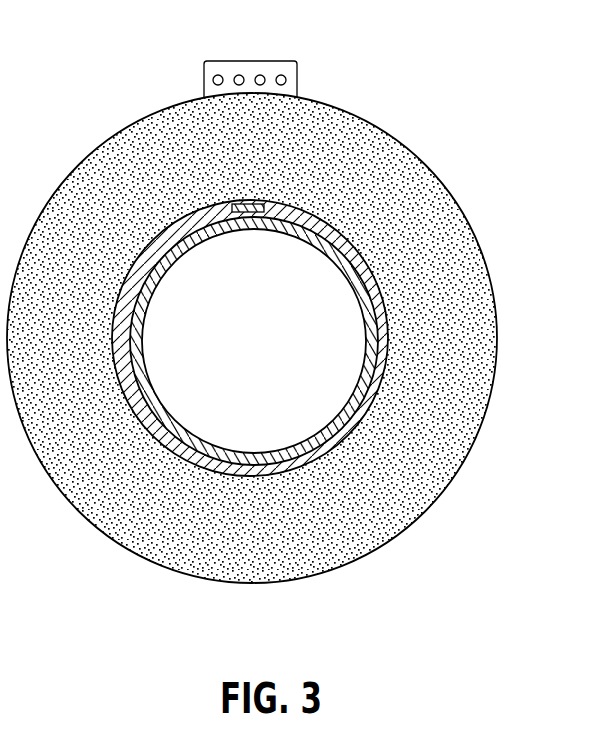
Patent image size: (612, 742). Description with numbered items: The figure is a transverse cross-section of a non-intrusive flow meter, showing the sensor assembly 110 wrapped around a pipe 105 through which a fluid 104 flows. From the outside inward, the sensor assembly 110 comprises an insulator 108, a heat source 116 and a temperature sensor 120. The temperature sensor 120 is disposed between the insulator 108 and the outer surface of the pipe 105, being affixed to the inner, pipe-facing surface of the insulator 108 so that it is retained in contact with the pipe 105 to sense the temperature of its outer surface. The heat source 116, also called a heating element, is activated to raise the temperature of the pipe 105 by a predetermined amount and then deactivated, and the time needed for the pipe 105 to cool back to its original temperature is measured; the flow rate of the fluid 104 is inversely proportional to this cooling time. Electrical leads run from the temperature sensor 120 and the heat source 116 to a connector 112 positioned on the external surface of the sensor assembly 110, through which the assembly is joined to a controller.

The fluid 104 is at (270, 354).
The pipe 105 is at (374, 389).
The insulator 108 is at (446, 228).
The sensor assembly 110 is at (107, 137).
The connector 112 is at (233, 62).
The heat source 116 is at (389, 312).
The temperature sensor 120 is at (257, 202).